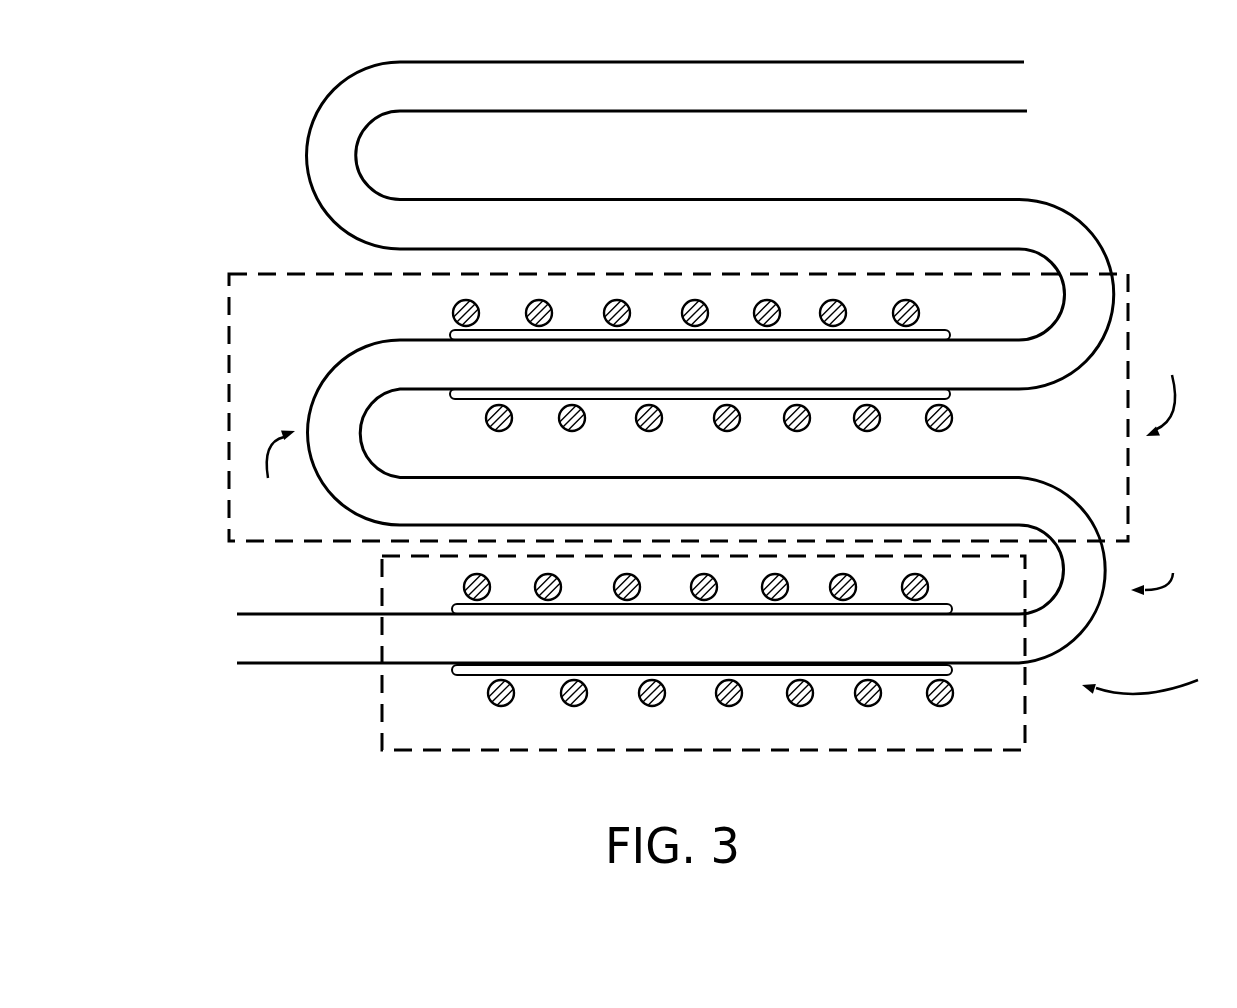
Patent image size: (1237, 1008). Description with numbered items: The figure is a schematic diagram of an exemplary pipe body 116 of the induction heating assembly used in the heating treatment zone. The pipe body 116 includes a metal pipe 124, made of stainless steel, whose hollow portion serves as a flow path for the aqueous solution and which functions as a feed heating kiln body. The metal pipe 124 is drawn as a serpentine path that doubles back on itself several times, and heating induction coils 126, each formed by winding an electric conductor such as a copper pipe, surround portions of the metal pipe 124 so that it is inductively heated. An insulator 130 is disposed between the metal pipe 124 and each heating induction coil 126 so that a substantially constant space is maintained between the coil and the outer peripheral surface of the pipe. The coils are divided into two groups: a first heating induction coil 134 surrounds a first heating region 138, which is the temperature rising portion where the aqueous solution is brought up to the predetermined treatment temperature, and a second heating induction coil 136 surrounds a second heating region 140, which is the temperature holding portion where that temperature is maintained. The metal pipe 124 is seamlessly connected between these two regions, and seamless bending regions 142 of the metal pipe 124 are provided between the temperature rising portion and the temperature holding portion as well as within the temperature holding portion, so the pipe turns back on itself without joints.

The pipe body 116 is at (1175, 388).
The metal pipe 124 is at (417, 112).
The heating induction coil 126 is at (1154, 672).
The insulator 130 is at (950, 337).
The first heating induction coil 134 is at (538, 576).
The second heating induction coil 136 is at (543, 303).
The first heating region 138 is at (473, 752).
The second heating region 140 is at (328, 272).
The seamless bending region 142 is at (727, 512).